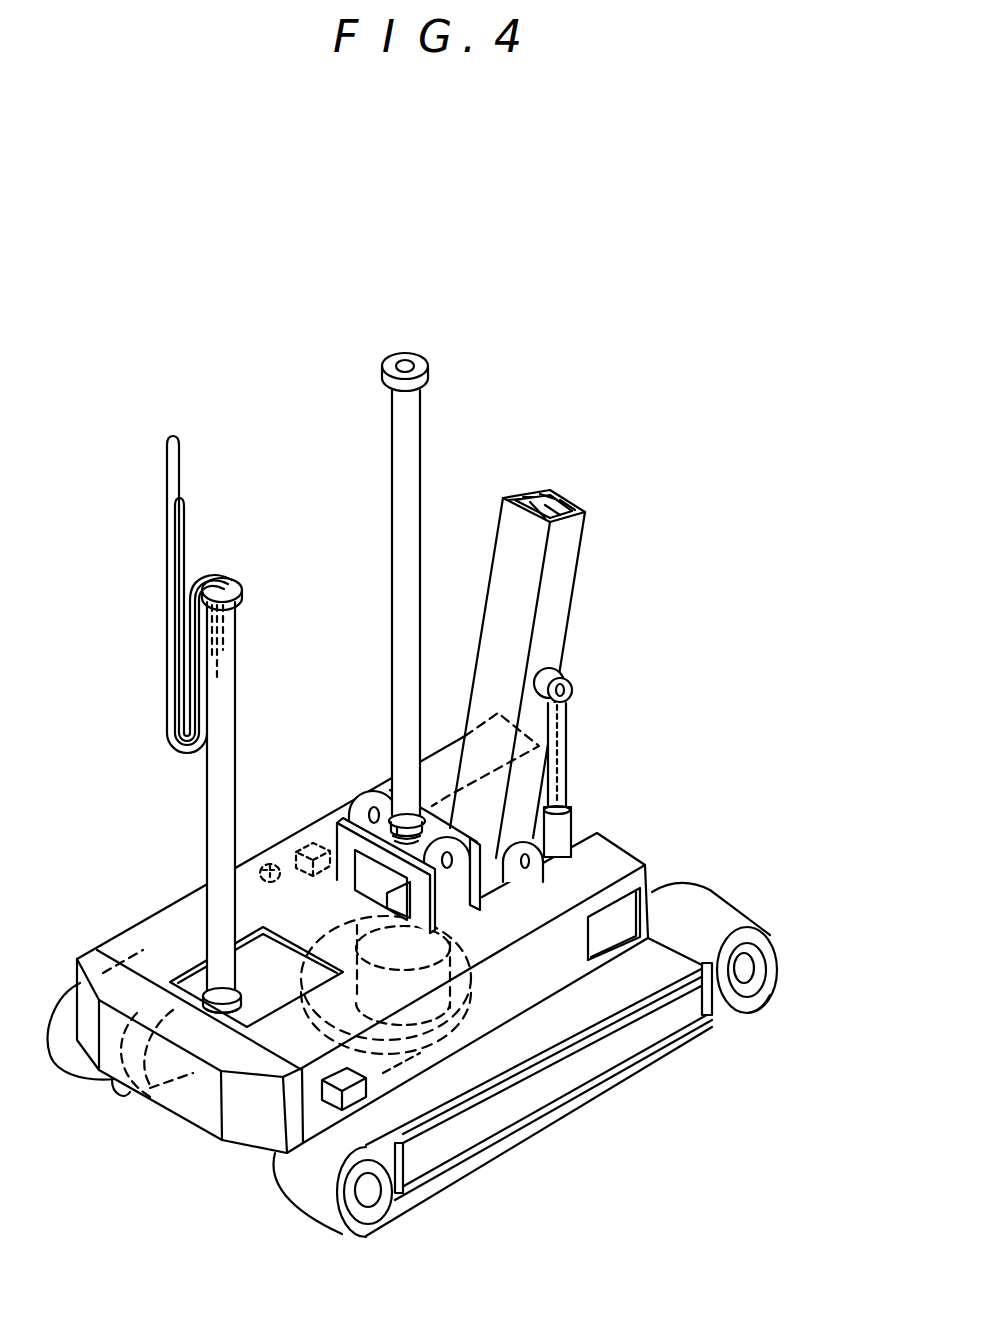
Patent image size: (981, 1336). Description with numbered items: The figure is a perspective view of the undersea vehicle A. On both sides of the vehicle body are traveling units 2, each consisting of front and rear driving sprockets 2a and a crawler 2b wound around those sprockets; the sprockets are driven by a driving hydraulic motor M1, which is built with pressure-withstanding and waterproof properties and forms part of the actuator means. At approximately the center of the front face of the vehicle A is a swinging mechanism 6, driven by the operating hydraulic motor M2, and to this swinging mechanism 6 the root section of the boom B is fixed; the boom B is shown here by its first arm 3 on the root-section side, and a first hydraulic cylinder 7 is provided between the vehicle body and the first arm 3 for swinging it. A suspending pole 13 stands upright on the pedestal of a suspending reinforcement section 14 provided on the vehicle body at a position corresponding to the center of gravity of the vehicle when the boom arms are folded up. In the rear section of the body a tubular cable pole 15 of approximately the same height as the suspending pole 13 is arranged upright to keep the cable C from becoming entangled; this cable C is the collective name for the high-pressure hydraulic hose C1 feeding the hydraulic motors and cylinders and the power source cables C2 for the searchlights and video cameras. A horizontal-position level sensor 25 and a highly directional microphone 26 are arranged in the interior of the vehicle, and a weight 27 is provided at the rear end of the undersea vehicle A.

The undersea vehicle A is at (157, 914).
The boom B is at (561, 686).
The cable C is at (174, 594).
The high-pressure hydraulic hose C1 is at (167, 517).
The power source cable C2 is at (185, 527).
The traveling unit 2 is at (711, 891).
The driving sprocket 2a is at (763, 962).
The crawler 2b is at (735, 1012).
The first arm 3 is at (568, 642).
The swinging mechanism 6 is at (345, 1033).
The first hydraulic cylinder 7 is at (570, 797).
The suspending pole 13 is at (392, 557).
The suspending reinforcement section 14 is at (490, 890).
The tubular cable pole 15 is at (237, 750).
The horizontal-position level sensor 25 is at (317, 840).
The highly directional microphone 26 is at (270, 862).
The weight 27 is at (188, 1120).
The driving hydraulic motor M1 is at (667, 880).
The operating hydraulic motor M2 is at (487, 962).